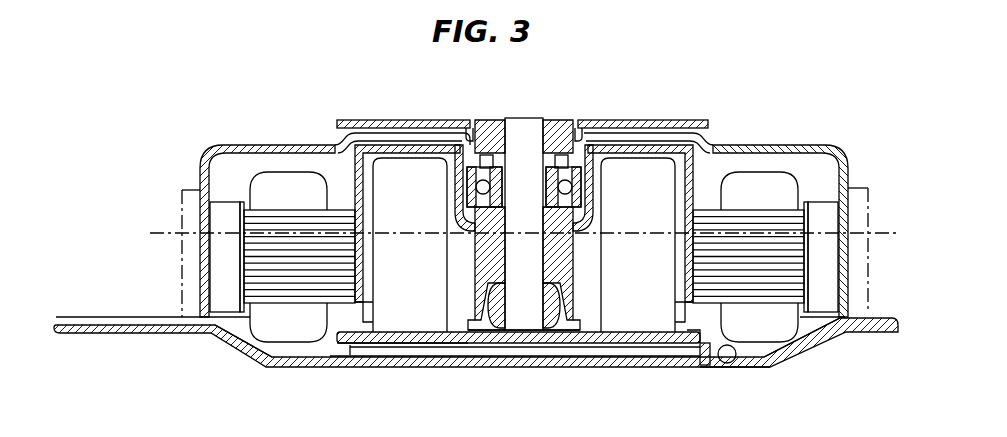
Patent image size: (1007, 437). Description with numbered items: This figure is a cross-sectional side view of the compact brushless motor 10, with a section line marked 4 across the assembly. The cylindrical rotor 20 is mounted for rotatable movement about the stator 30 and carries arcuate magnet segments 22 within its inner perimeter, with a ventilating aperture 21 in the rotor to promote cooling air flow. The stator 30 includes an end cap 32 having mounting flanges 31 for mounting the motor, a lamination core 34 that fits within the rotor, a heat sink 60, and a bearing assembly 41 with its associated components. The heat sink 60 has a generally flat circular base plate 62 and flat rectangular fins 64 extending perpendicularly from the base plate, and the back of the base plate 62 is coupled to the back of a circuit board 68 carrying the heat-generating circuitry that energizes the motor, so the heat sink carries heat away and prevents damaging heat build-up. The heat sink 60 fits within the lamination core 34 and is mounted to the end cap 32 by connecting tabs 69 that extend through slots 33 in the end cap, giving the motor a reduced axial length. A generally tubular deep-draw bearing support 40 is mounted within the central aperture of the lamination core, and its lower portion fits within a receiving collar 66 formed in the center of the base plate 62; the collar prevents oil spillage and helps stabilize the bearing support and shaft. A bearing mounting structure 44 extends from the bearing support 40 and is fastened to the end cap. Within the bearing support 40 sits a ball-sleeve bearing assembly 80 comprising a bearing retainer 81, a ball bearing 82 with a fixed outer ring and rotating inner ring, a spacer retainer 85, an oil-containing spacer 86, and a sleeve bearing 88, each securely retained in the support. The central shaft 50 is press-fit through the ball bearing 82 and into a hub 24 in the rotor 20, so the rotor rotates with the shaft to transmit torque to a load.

The brushless motor 10 is at (186, 109).
The rotor 20 is at (546, 203).
The ventilating aperture 21 is at (712, 141).
The magnet segments 22 is at (840, 151).
The hub 24 is at (490, 118).
The stator 30 is at (476, 361).
The mounting flanges 31 is at (80, 335).
The end cap 32 is at (240, 350).
The slots 33 is at (722, 364).
The lamination core 34 is at (775, 307).
The bearing support 40 is at (591, 332).
The bearing assembly 41 is at (466, 308).
The bearing mounting structure 44 is at (490, 259).
The shaft 50 is at (527, 118).
The heat sink 60 is at (342, 325).
The base plate 62 is at (660, 347).
The fins 64 is at (652, 316).
The receiving collar 66 is at (447, 347).
The circuit board 68 is at (372, 356).
The connecting tabs 69 is at (702, 362).
The ball-sleeve bearing assembly 80 is at (523, 232).
The bearing retainer 81 is at (583, 118).
The ball bearing 82 is at (572, 185).
The spacer retainer 85 is at (572, 218).
The spacer 86 is at (572, 258).
The sleeve bearing 88 is at (548, 340).
The section line 4- 4 is at (898, 258).